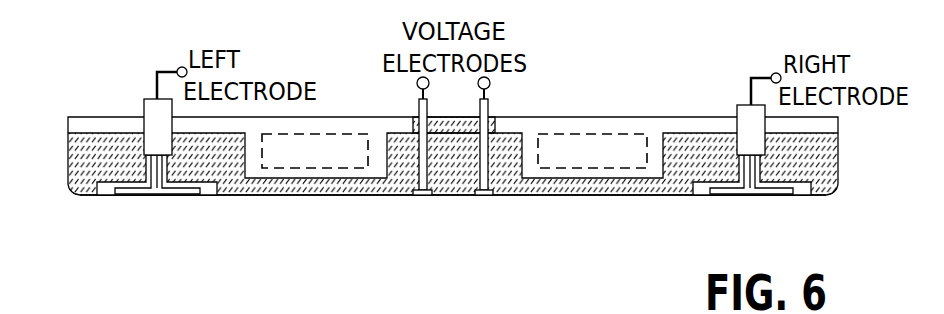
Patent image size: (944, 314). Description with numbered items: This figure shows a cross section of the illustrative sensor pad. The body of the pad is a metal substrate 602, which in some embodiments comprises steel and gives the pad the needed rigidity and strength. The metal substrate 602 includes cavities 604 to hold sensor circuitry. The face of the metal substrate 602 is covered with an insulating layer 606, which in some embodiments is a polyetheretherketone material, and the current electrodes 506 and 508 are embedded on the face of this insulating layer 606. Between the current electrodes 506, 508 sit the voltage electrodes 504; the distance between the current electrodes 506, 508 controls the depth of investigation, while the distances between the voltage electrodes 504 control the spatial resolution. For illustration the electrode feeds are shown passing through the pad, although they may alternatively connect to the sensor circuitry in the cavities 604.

The voltage electrodes 504 is at (427, 195).
The current electrode 506 is at (165, 196).
The current electrode 508 is at (757, 197).
The metal substrate 602 is at (534, 116).
The cavities 604 is at (300, 168).
The insulating layer 606 is at (352, 195).